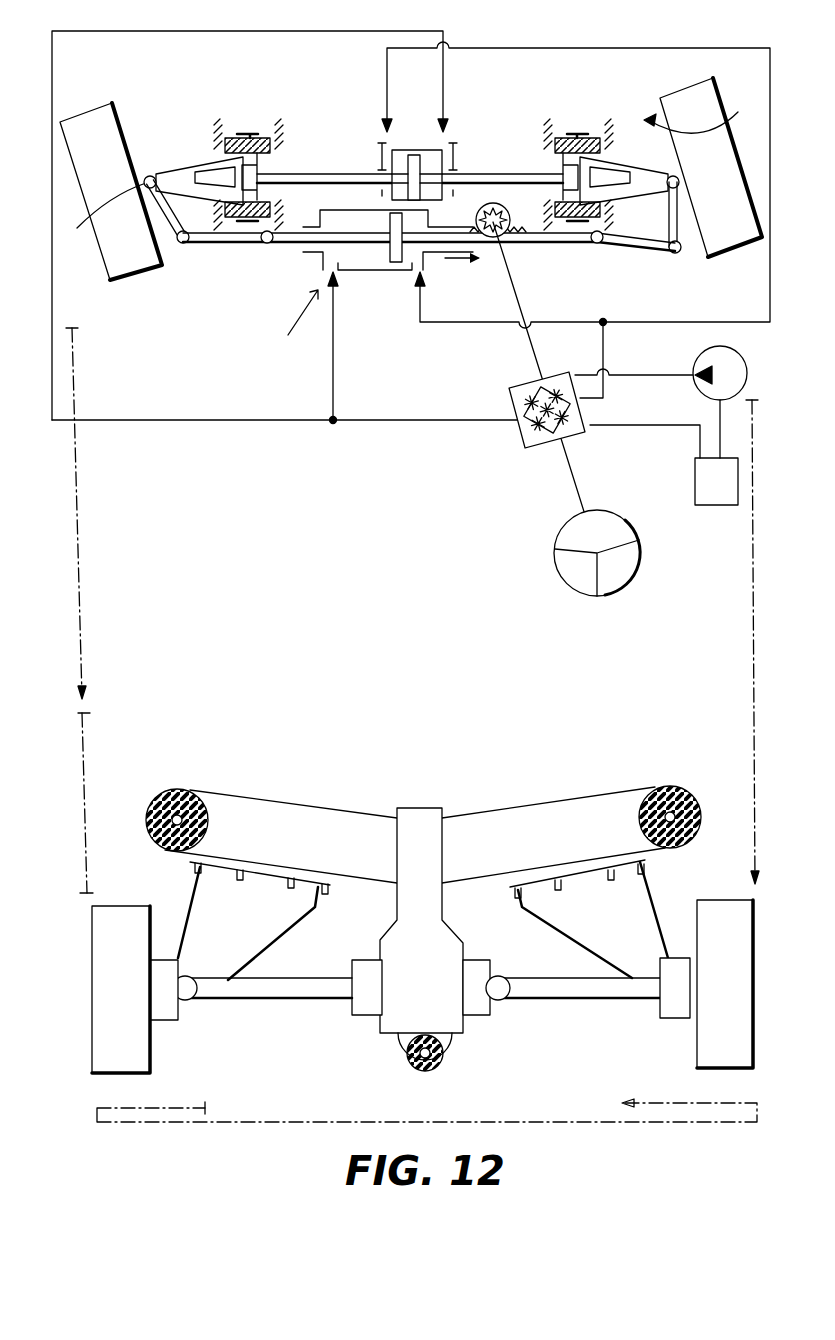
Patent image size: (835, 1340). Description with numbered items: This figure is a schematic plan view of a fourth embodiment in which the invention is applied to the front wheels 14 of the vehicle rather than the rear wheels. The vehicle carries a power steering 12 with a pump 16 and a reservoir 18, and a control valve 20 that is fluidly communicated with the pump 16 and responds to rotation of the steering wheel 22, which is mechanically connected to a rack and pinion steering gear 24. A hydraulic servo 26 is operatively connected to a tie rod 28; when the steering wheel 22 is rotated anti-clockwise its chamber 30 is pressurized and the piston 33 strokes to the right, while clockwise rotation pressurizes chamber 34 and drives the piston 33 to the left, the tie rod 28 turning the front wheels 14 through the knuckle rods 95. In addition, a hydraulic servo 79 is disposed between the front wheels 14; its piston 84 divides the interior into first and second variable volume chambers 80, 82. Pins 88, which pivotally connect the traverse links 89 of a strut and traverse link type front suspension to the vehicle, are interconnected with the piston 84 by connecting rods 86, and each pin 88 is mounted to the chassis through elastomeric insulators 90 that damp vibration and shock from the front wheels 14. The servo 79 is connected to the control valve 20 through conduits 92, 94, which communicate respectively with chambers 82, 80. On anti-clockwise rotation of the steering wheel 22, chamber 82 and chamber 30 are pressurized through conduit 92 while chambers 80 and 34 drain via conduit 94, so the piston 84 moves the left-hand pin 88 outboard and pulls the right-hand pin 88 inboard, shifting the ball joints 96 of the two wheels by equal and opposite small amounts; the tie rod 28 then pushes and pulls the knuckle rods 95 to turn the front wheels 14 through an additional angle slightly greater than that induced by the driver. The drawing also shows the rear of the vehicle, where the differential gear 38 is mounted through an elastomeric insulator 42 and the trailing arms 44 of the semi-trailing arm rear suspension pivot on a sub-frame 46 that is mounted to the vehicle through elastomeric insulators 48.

The power steering 12 is at (285, 329).
The front wheels 14 is at (140, 272).
The pump 16 is at (734, 370).
The reservoir 18 is at (718, 498).
The control valve 20 is at (518, 447).
The steering wheel 22 is at (590, 597).
The rack and pinion steering gear 24 is at (511, 247).
The hydraulic servo 26 is at (352, 272).
The tie rod 28 is at (286, 244).
The chamber 30 is at (318, 255).
The piston 33 is at (396, 265).
The chamber 34 is at (430, 258).
The differential gear 38 is at (395, 1033).
The elastomeric insulator 42 is at (443, 1064).
The trailing arms 44 is at (268, 922).
The sub-frame 46 is at (335, 815).
The elastomeric insulators 48 is at (178, 792).
The hydraulic servo 79 is at (417, 150).
The first variable volume chamber 80 is at (386, 190).
The second variable volume chamber 82 is at (448, 194).
The piston 84 is at (388, 162).
The connecting rods 86 is at (306, 172).
The pins 88 is at (252, 134).
The traverse links 89 is at (190, 173).
The elastomeric insulators 90 is at (240, 134).
The conduit 92 is at (172, 420).
The conduit 94 is at (606, 48).
The knuckle rods 95 is at (166, 220).
The ball joint 96 is at (408, 173).